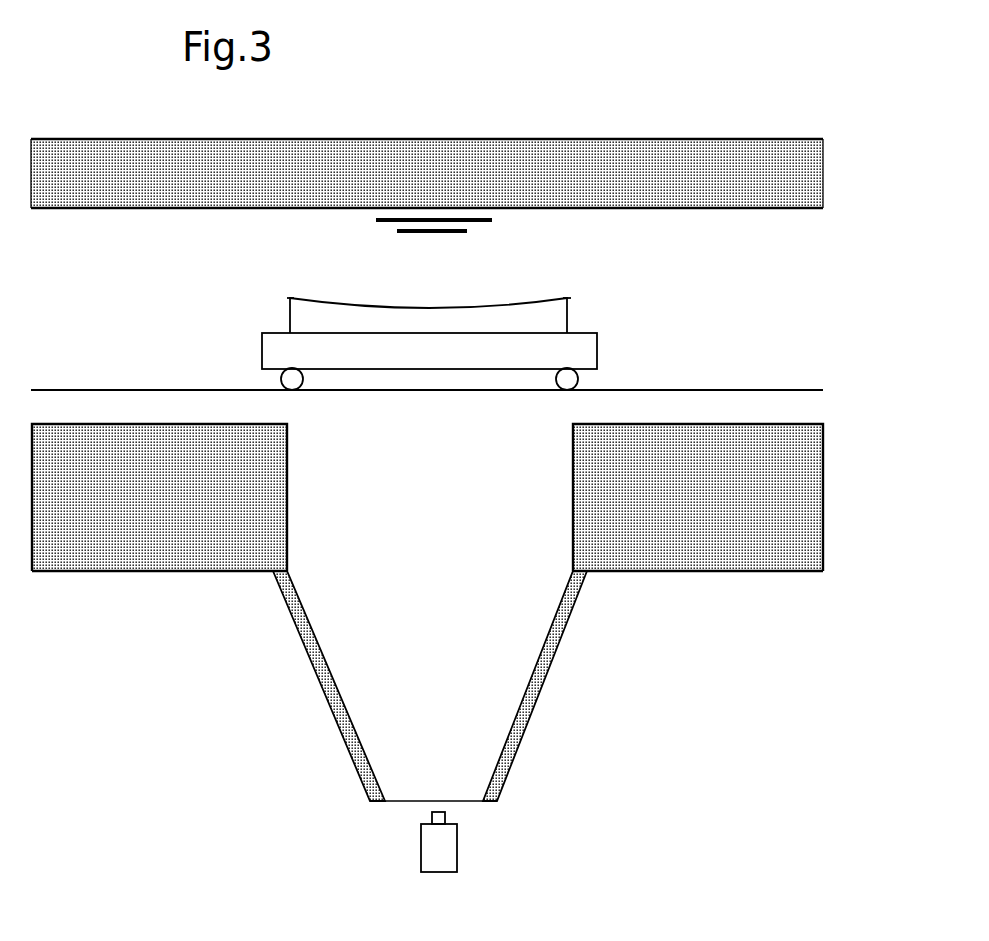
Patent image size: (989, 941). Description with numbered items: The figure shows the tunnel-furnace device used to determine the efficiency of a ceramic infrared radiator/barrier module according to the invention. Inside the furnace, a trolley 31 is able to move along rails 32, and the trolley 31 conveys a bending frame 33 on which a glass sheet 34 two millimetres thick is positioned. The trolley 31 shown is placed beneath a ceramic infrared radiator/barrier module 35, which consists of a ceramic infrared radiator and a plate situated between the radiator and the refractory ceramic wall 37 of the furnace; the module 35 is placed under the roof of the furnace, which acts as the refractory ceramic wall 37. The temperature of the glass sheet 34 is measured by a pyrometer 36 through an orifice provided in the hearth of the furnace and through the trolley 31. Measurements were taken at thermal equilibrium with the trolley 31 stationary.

The trolley 31 is at (600, 343).
The rails 32 is at (689, 389).
The bending frame 33 is at (288, 322).
The glass sheet 34 is at (481, 307).
The ceramic infrared radiator/barrier module 35 is at (355, 228).
The pyrometer 36 is at (437, 847).
The refractory ceramic wall 37 is at (431, 183).